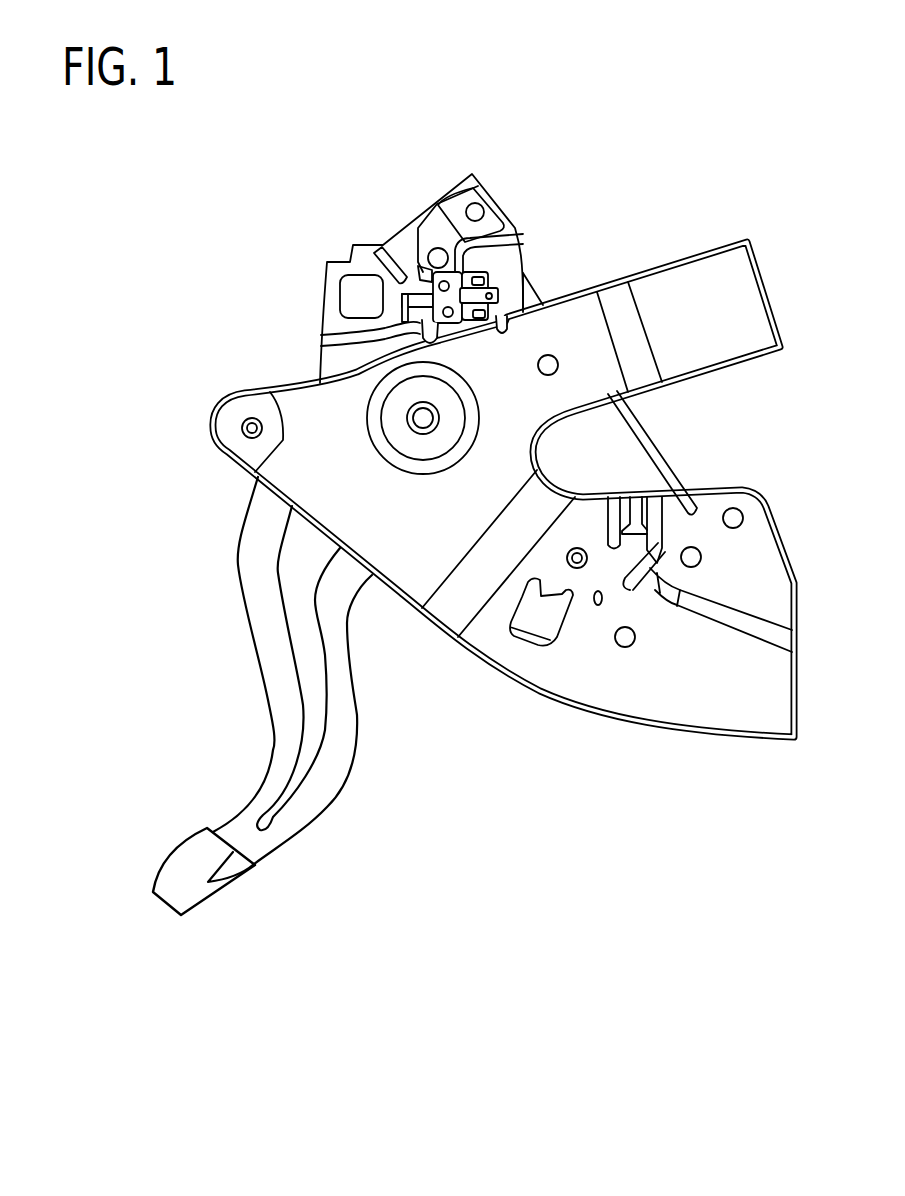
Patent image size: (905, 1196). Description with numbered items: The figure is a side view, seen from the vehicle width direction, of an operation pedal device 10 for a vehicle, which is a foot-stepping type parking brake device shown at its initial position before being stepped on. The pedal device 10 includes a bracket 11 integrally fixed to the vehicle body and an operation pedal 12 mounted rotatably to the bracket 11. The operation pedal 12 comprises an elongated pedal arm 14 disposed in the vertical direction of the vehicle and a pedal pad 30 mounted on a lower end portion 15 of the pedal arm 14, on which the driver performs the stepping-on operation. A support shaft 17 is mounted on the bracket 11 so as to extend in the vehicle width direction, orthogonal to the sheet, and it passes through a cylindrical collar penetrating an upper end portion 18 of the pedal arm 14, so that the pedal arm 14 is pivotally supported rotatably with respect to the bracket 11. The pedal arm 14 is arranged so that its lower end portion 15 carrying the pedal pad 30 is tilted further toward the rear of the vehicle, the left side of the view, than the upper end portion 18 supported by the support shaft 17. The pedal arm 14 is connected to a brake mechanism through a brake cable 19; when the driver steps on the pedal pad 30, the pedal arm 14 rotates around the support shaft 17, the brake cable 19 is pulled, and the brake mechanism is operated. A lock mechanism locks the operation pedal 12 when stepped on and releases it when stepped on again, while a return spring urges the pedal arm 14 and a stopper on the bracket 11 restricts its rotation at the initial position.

The operation pedal device 10 is at (661, 133).
The bracket 11 is at (650, 737).
The operation pedal 12 is at (188, 637).
The pedal arm 14 is at (365, 715).
The lower end portion 15 is at (236, 832).
The support shaft 17 is at (433, 425).
The upper end portion 18 is at (330, 370).
The brake cable 19 is at (650, 440).
The pedal pad 30 is at (177, 890).